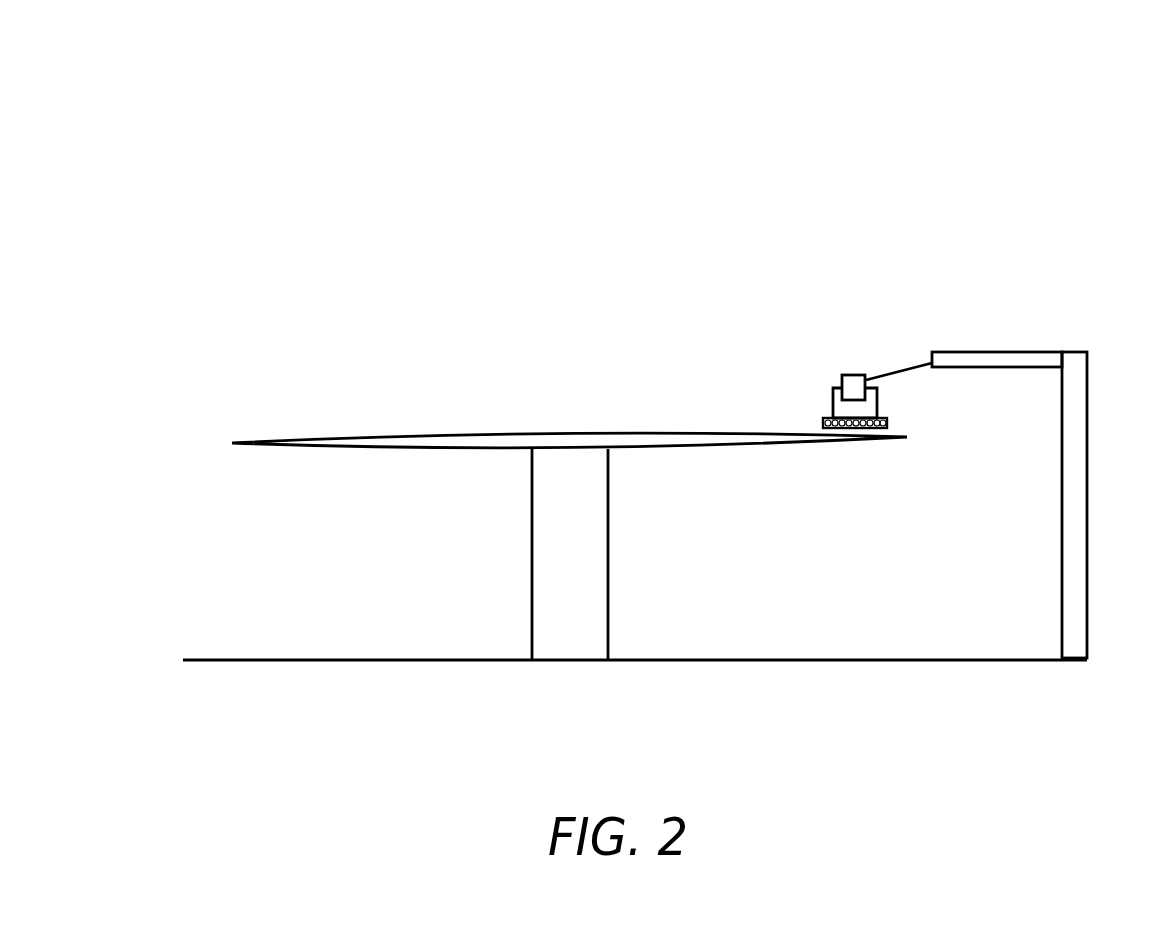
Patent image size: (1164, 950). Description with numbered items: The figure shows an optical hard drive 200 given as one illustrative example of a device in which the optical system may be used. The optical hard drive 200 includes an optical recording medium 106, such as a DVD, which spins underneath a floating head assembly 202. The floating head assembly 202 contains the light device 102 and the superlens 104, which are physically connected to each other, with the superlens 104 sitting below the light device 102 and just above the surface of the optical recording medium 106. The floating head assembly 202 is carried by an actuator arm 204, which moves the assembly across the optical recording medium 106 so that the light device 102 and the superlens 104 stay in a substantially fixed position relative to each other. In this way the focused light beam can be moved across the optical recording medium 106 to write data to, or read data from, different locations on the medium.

The optical hard drive 200 is at (637, 38).
The optical recording medium 106 is at (370, 434).
The floating head assembly 202 is at (800, 420).
The light device 102 is at (851, 374).
The superlens 104 is at (888, 421).
The actuator arm 204 is at (1018, 352).